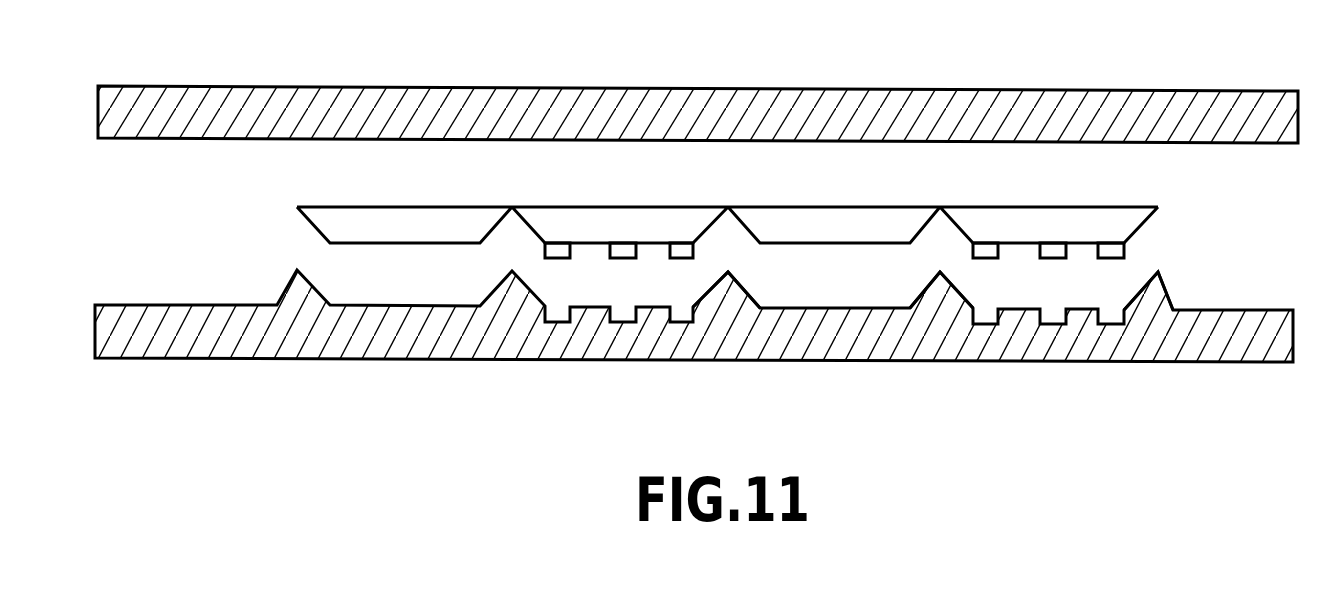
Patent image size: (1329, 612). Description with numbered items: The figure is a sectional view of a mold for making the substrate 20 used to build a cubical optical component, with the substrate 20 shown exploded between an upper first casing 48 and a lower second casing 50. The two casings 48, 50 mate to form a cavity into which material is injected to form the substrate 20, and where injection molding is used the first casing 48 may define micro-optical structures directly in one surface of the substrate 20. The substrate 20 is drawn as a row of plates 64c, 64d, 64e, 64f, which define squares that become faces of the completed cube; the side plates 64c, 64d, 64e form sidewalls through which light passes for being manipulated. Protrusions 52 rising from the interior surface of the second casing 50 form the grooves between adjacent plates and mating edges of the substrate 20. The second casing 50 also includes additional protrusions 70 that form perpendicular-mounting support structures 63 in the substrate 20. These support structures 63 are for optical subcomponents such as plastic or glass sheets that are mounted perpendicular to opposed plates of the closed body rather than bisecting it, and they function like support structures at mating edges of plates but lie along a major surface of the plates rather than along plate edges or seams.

The substrate 20 is at (156, 220).
The first casing 48 is at (705, 89).
The second casing 50 is at (743, 360).
The protrusions 52 is at (925, 295).
The perpendicular-mounting support structures 63 is at (1043, 259).
The side plate 64c is at (437, 220).
The side plate 64d is at (652, 220).
The side plate 64e is at (865, 220).
The plate 64f is at (1098, 225).
The additional protrusions 70 is at (1102, 310).